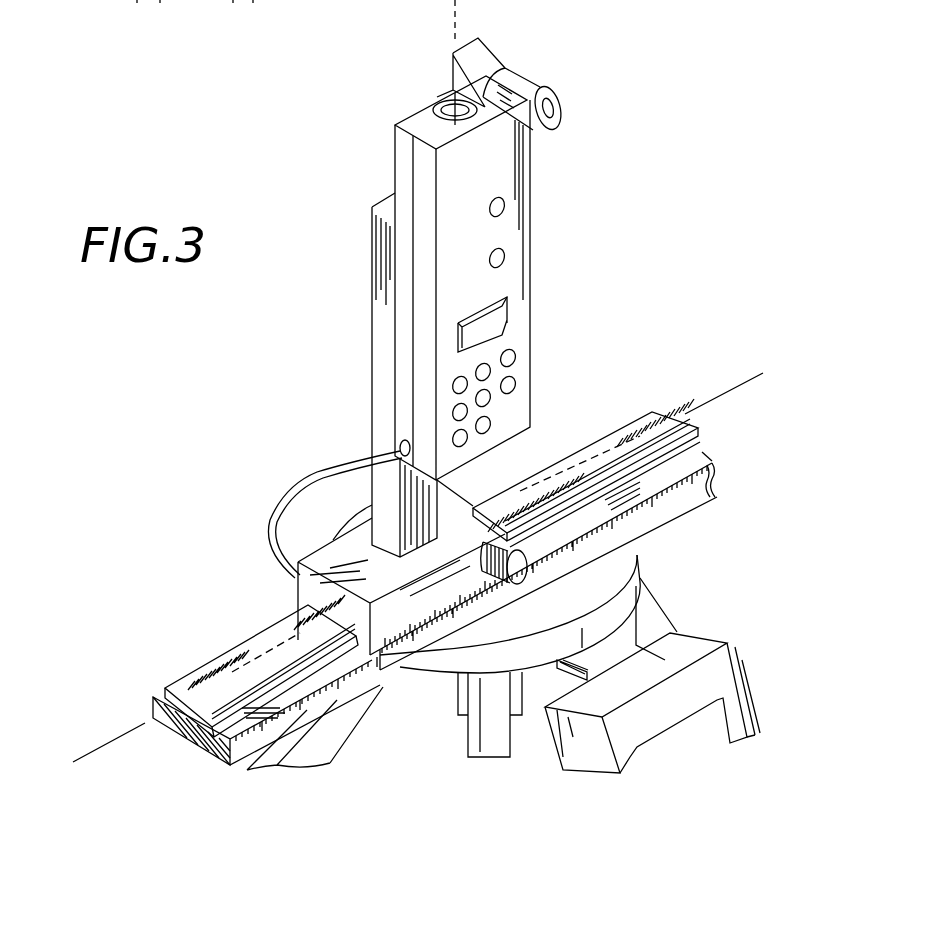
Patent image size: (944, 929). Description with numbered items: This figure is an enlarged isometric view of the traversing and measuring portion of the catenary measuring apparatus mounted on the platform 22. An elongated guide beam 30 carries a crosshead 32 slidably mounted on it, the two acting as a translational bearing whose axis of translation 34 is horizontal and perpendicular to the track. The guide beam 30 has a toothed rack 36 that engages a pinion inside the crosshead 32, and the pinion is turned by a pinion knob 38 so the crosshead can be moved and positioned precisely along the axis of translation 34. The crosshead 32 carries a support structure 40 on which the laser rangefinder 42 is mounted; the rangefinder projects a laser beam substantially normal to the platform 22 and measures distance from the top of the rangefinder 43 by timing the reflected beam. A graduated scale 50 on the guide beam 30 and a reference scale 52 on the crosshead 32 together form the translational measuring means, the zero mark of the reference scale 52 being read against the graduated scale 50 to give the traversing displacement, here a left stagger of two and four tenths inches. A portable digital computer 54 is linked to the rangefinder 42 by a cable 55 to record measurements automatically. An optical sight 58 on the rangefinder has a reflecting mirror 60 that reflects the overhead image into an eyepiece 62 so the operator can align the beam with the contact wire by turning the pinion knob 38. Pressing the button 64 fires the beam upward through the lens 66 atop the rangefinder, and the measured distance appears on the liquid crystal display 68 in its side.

The platform 22 is at (600, 572).
The guide beam 30 is at (172, 682).
The crosshead 32 is at (305, 592).
The axis of translation 34 is at (97, 747).
The toothed rack 36 is at (658, 423).
The pinion knob 38 is at (541, 565).
The support structure 40 is at (371, 305).
The laser rangefinder 42 is at (458, 240).
The top of the rangefinder 43 is at (395, 125).
The graduated scale 50 is at (713, 480).
The reference scale 52 is at (387, 650).
The portable digital computer 54 is at (680, 642).
The cable 55 is at (277, 497).
The optical sight 58 is at (597, 76).
The reflecting mirror 60 is at (488, 62).
The eyepiece 62 is at (560, 112).
The button 64 is at (504, 204).
The lens 66 is at (445, 104).
The liquid crystal display 68 is at (504, 313).